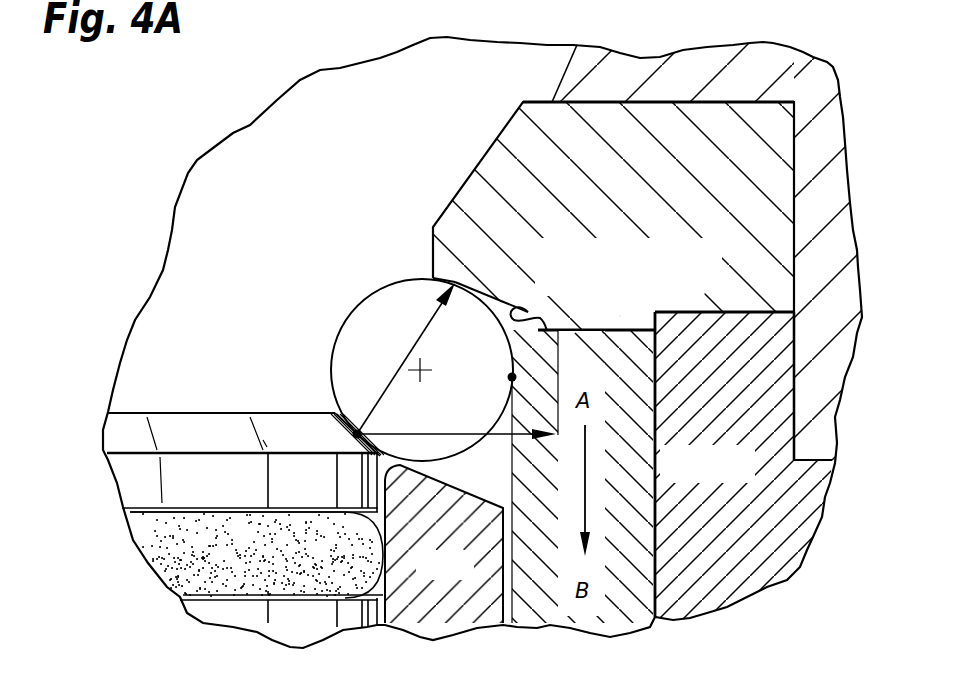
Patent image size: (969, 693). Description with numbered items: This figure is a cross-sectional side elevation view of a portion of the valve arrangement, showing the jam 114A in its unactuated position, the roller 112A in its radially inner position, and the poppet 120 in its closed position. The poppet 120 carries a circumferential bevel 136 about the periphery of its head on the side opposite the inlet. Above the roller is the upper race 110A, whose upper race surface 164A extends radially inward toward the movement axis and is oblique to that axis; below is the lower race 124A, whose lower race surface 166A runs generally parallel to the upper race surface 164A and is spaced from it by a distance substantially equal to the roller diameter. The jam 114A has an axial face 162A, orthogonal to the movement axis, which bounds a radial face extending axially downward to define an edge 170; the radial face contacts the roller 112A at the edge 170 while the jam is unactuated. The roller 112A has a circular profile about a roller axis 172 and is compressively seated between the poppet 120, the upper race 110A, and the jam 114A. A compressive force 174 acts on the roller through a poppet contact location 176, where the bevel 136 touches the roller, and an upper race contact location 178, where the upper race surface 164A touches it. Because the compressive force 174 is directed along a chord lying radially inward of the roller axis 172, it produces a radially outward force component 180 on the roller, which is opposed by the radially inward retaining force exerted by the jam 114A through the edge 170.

The upper race 110A is at (470, 175).
The roller 112A is at (335, 345).
The jam 114A is at (658, 482).
The poppet 120 is at (188, 472).
The lower race 124A is at (473, 577).
The circumferential bevel 136 is at (333, 417).
The axial face 162A is at (616, 325).
The upper race surface 164A is at (527, 313).
The lower race surface 166A is at (447, 485).
The edge 170 is at (510, 375).
The roller axis 172 is at (425, 360).
The compressive force 174 is at (395, 300).
The poppet contact location 176 is at (338, 425).
The upper race contact location 178 is at (457, 270).
The radially outward force component 180 is at (438, 433).